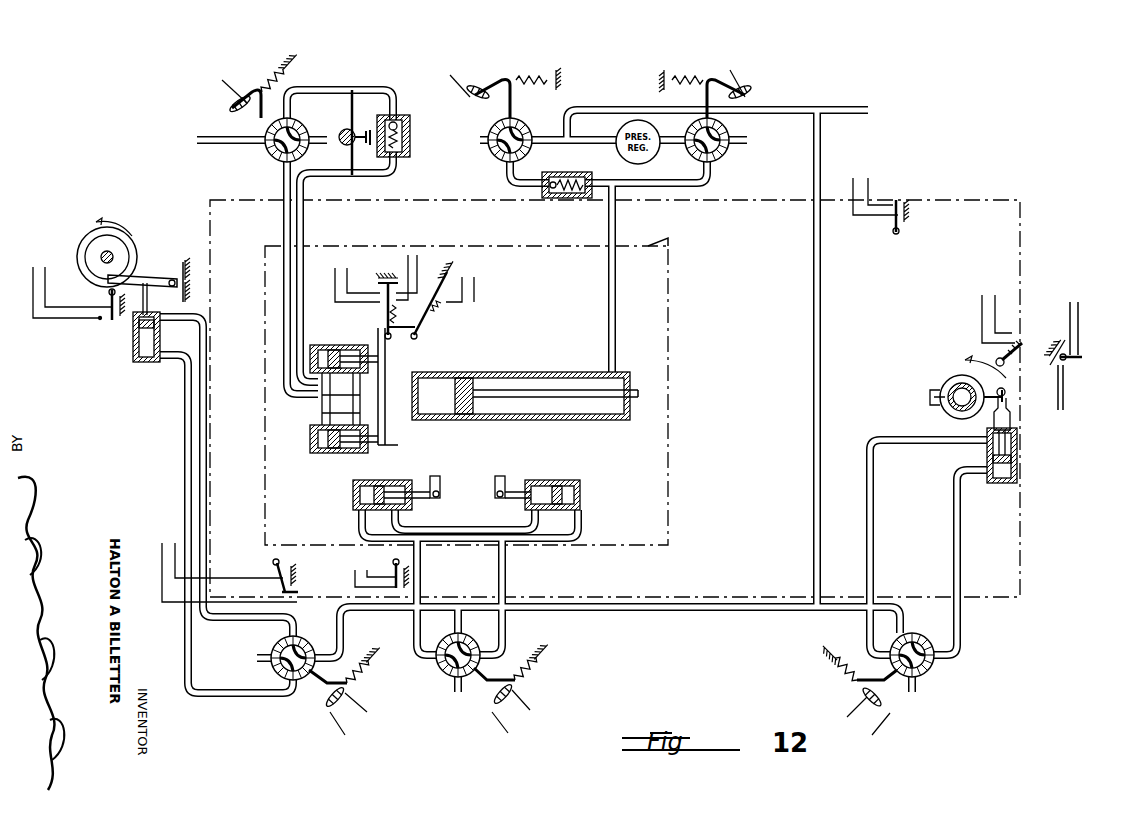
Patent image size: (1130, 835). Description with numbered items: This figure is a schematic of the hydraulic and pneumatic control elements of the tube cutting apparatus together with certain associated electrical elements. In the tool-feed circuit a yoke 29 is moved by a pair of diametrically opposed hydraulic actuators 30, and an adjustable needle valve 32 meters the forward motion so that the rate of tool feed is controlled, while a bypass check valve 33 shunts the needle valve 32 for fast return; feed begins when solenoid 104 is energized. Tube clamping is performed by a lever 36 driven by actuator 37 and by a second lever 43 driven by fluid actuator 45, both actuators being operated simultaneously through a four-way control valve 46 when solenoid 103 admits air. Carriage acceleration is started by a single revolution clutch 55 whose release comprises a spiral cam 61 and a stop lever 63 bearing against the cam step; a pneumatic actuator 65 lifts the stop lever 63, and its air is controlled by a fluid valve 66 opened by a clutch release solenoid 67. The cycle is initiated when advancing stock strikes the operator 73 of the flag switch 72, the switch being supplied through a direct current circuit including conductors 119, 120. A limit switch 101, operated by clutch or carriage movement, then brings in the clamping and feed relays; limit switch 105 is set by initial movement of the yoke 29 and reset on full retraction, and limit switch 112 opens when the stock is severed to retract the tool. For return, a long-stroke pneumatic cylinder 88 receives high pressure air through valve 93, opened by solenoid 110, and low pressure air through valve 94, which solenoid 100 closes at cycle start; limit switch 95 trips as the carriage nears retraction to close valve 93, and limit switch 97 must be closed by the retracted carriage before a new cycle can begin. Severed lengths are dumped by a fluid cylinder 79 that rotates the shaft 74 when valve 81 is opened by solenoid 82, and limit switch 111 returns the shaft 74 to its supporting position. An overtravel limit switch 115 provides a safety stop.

The yoke 29 is at (388, 442).
The hydraulic actuators 30 is at (340, 345).
The needle valve 32 is at (342, 130).
The bypass check valve 33 is at (412, 130).
The lever 36 is at (440, 480).
The actuator 37 is at (378, 480).
The lever 43 is at (500, 476).
The fluid actuator 45 is at (565, 480).
The four-way control valve 46 is at (440, 672).
The single revolution clutch 55 is at (128, 238).
The spiral cam 61 is at (92, 247).
The stop lever 63 is at (170, 272).
The pneumatic actuator 65 is at (133, 357).
The fluid valve 66 is at (270, 665).
The clutch release solenoid 67 is at (325, 716).
The flag switch 72 is at (1080, 357).
The operator 73 is at (1065, 405).
The rotatable shaft 74 is at (946, 406).
The fluid cylinder 79 is at (1020, 450).
The valve 81 is at (932, 670).
The solenoid 82 is at (890, 715).
The pneumatic cylinder 88 is at (495, 372).
The valve 93 is at (492, 158).
The valve 94 is at (731, 130).
The limit switch 95 is at (392, 566).
The limit switch 97 is at (296, 582).
The solenoid 100 is at (757, 85).
The limit switch 101 is at (108, 322).
The solenoid 103 is at (520, 690).
The solenoid 104 is at (232, 108).
The limit switch 105 is at (383, 318).
The solenoid 110 is at (480, 88).
The limit switch 111 is at (992, 352).
The limit switch 112 is at (428, 316).
The overtravel limit switch 115 is at (899, 232).
The conductor 119 is at (1068, 312).
The conductor 120 is at (1078, 312).